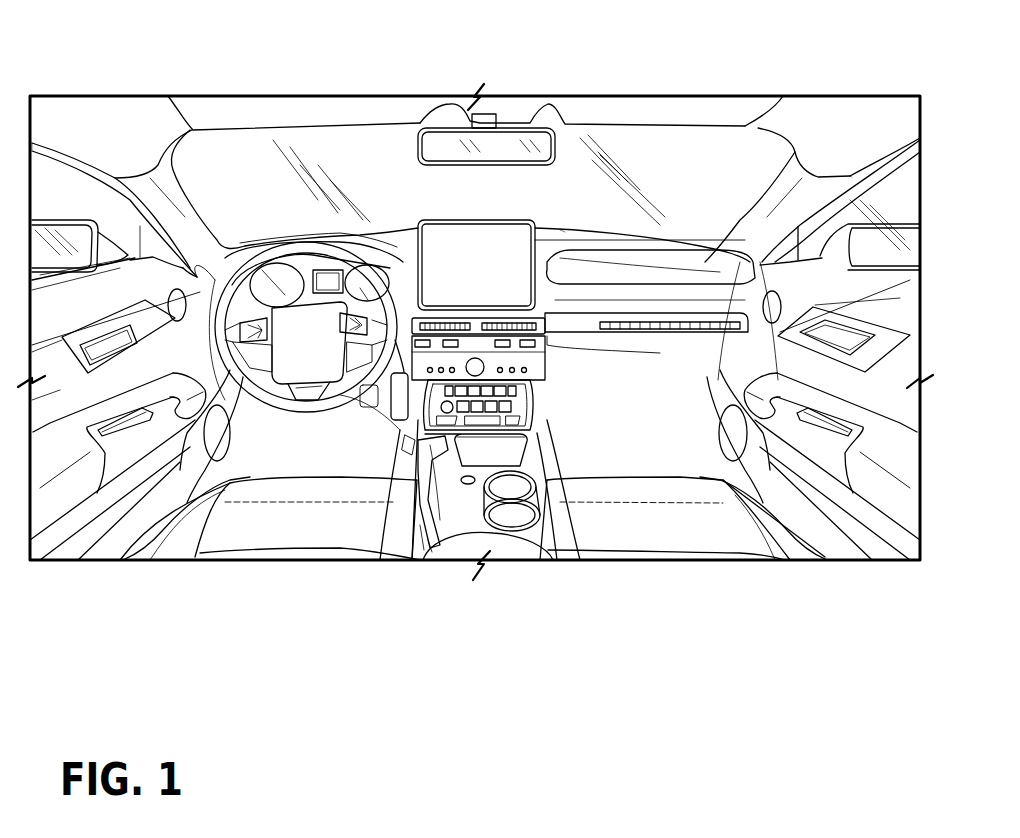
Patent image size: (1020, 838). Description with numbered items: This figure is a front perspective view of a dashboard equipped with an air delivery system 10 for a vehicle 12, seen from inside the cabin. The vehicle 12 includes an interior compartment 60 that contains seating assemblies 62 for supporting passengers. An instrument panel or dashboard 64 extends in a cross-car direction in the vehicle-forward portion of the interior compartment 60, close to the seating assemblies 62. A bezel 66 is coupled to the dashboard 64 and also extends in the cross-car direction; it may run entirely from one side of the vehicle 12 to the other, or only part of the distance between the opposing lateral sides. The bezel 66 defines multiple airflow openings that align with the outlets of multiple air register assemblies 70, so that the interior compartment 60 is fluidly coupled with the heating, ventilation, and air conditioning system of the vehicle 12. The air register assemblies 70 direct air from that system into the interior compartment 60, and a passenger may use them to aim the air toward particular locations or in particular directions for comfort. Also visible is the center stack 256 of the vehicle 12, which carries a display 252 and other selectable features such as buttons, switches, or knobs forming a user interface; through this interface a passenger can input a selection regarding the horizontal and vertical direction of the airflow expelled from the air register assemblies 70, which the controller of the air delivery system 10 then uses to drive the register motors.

The air delivery system 10 is at (560, 234).
The vehicle 12 is at (114, 138).
The interior compartment 60 is at (845, 130).
The seating assemblies 62 is at (297, 540).
The dashboard 64 is at (630, 285).
The bezel 66 is at (470, 318).
The air register assemblies 70 is at (432, 330).
The display 252 is at (482, 245).
The center stack 256 is at (490, 414).